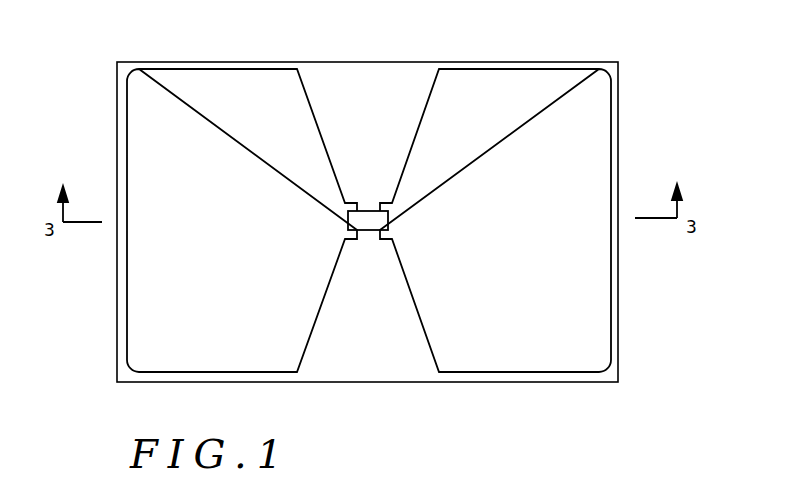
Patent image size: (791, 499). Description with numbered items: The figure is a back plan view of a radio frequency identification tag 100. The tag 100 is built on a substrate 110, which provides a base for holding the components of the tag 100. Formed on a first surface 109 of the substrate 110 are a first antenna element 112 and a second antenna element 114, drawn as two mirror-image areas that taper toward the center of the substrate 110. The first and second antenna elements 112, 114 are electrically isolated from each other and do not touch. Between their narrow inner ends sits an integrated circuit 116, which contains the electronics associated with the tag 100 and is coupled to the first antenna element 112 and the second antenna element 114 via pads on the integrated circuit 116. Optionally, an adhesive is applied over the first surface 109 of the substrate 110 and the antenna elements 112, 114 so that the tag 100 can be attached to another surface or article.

The RFID tag 100 is at (366, 43).
The substrate 110 is at (407, 374).
The first antenna element 112 is at (530, 78).
The second antenna element 114 is at (202, 78).
The integrated circuit 116 is at (367, 222).
The first surface 109 is at (384, 357).